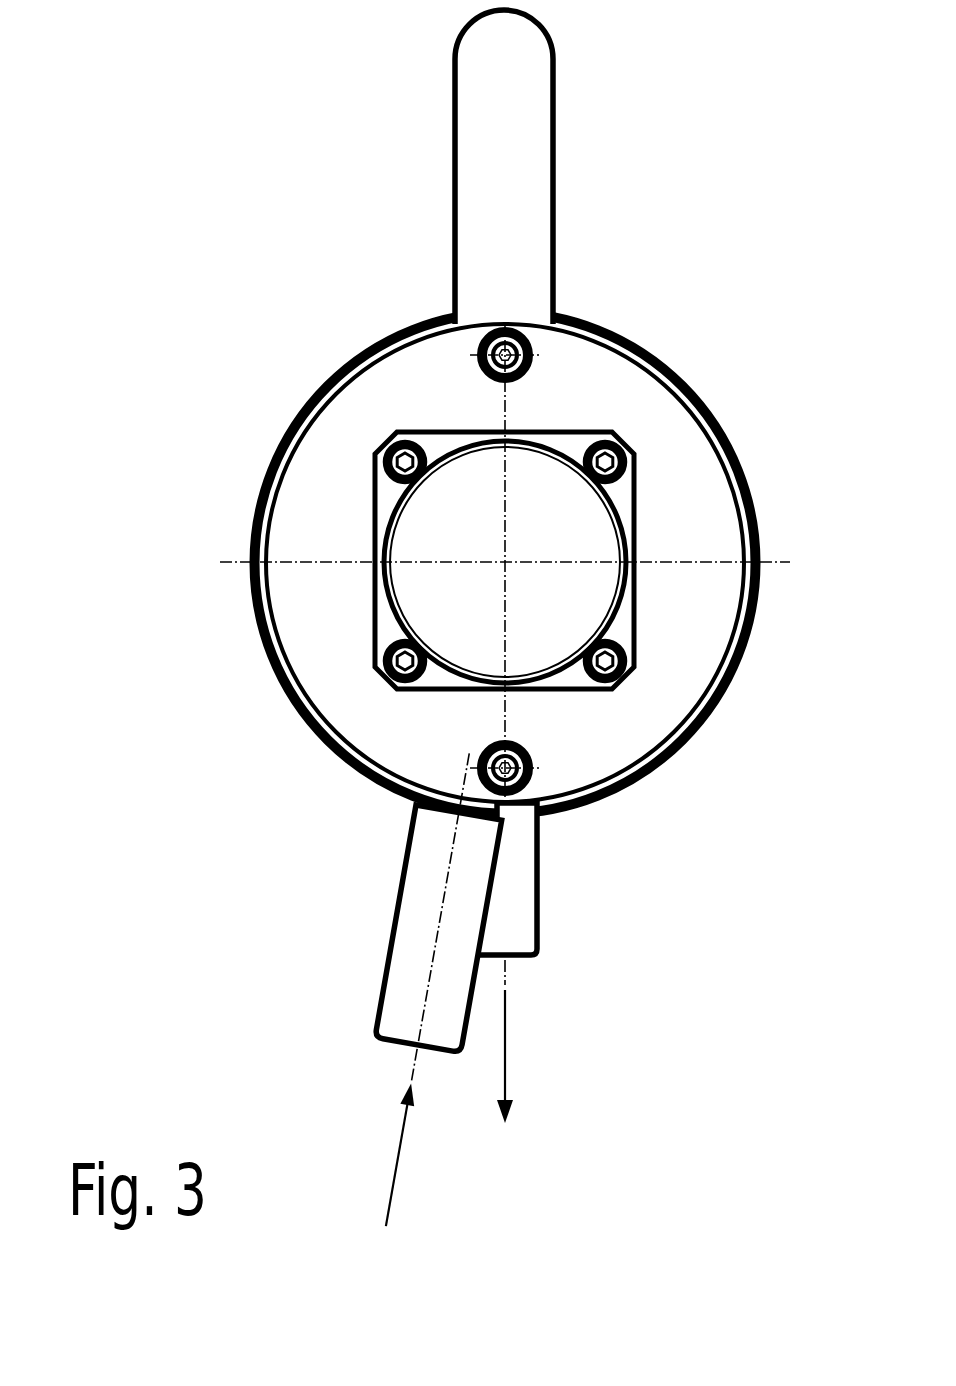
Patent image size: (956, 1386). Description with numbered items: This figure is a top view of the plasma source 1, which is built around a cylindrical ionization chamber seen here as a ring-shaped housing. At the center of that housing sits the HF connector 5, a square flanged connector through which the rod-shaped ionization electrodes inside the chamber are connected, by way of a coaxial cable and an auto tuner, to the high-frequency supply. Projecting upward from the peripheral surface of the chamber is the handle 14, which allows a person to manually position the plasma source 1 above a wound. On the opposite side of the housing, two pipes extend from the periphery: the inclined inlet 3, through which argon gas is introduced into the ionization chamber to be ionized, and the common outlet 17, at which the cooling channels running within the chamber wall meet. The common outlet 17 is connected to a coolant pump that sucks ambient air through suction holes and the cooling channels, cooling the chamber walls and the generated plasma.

The plasma source 1 is at (213, 326).
The inlet 3 is at (408, 982).
The HF connector 5 is at (573, 528).
The handle 14 is at (493, 170).
The common outlet 17 is at (520, 907).